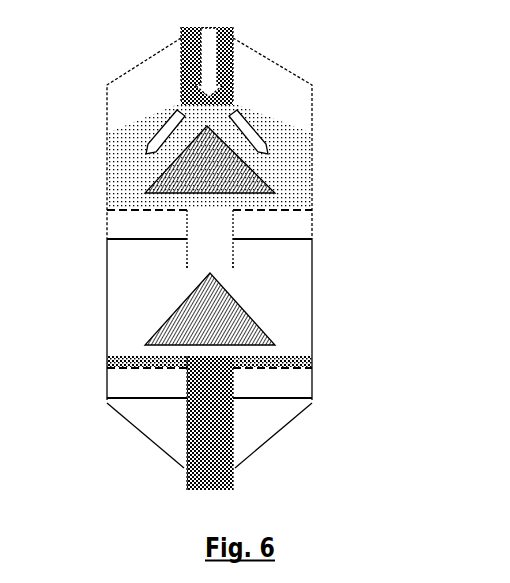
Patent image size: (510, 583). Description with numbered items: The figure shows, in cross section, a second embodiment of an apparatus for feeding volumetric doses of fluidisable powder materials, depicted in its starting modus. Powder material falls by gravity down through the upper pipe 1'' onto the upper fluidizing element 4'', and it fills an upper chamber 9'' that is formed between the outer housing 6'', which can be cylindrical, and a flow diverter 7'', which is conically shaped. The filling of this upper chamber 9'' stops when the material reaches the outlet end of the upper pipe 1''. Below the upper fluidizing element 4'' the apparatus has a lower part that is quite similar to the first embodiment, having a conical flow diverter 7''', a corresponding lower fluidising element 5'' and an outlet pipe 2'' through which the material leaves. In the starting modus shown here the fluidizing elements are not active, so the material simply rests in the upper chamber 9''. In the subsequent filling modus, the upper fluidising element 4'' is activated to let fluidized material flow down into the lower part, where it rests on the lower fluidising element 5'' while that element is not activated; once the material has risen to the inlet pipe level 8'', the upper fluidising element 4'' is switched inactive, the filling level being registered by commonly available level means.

The upper pipe 1'' is at (278, 66).
The outlet pipe 2'' is at (275, 423).
The upper fluidizing element 4'' is at (241, 240).
The lower fluidising element 5'' is at (248, 362).
The outer housing 6'' is at (241, 253).
The flow diverter 7'' is at (260, 159).
The conical flow diverter 7''' is at (262, 309).
The inlet pipe level 8'' is at (281, 271).
The upper chamber 9'' is at (241, 155).